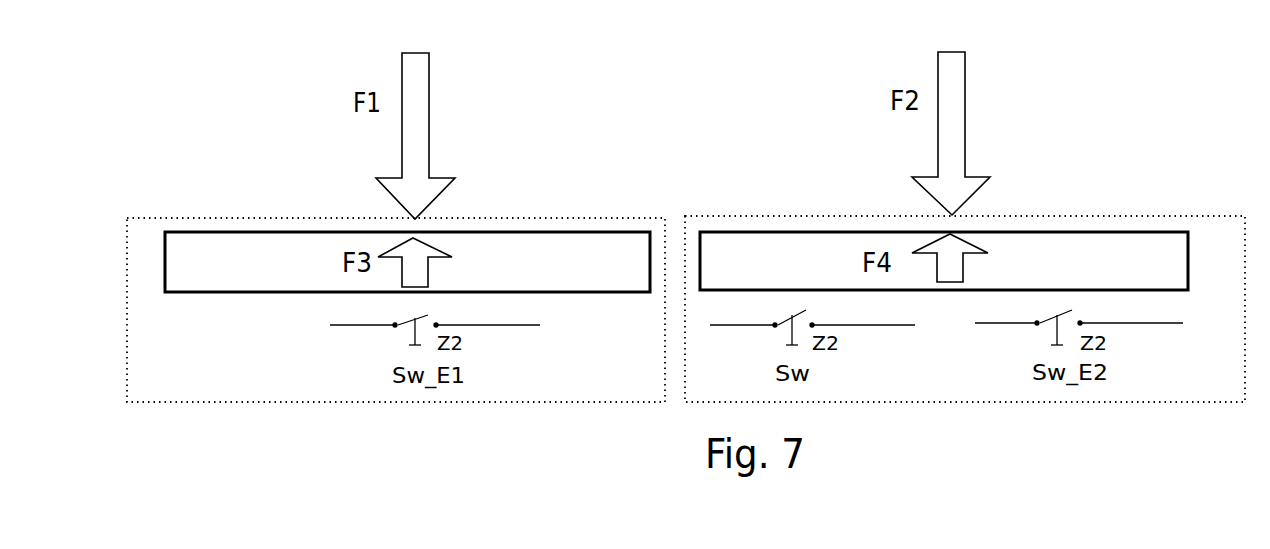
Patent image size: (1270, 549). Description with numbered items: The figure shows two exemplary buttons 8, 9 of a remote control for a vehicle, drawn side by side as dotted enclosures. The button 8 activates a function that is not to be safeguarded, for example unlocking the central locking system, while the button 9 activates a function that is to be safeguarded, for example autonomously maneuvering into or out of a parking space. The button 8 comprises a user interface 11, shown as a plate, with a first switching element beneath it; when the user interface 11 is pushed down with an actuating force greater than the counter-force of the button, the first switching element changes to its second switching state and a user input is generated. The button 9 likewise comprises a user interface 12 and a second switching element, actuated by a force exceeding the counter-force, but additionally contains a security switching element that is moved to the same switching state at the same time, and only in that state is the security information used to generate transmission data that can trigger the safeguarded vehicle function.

The button 8 is at (211, 216).
The button 9 is at (822, 216).
The user interface 11 is at (220, 293).
The user interface 12 is at (1188, 275).